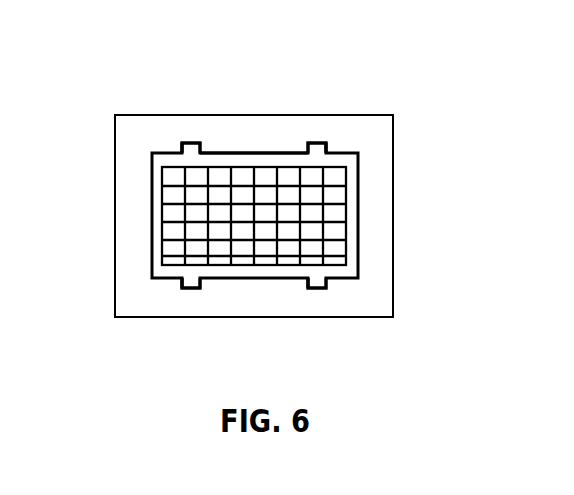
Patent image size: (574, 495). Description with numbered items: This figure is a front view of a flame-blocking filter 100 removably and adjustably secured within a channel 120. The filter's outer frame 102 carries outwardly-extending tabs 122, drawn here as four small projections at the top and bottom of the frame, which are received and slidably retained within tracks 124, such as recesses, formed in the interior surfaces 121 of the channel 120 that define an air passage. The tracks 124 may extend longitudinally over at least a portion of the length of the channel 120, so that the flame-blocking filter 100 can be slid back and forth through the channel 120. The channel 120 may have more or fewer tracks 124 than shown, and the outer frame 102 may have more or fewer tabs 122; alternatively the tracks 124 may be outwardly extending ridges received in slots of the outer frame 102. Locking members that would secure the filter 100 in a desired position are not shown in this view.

The flame-blocking filter 100 is at (302, 191).
The outer frame 102 is at (270, 153).
The channel 120 is at (394, 230).
The interior surfaces 121 is at (222, 151).
The outwardly-extending tabs 122 is at (188, 144).
The tracks 124 is at (181, 148).